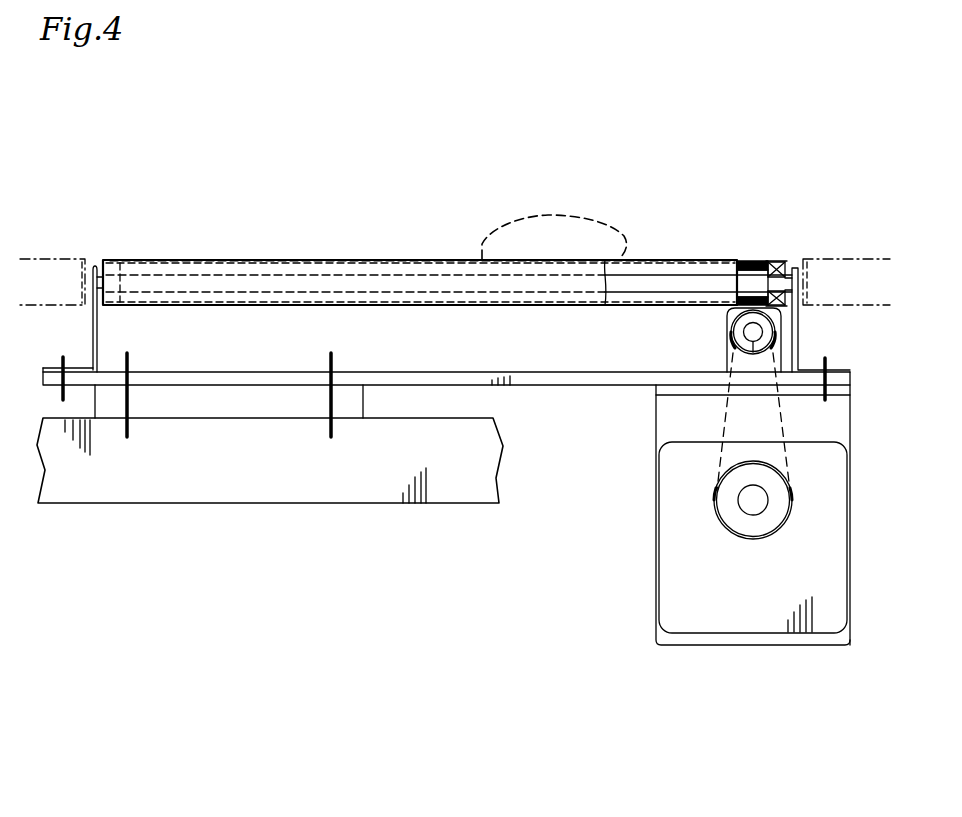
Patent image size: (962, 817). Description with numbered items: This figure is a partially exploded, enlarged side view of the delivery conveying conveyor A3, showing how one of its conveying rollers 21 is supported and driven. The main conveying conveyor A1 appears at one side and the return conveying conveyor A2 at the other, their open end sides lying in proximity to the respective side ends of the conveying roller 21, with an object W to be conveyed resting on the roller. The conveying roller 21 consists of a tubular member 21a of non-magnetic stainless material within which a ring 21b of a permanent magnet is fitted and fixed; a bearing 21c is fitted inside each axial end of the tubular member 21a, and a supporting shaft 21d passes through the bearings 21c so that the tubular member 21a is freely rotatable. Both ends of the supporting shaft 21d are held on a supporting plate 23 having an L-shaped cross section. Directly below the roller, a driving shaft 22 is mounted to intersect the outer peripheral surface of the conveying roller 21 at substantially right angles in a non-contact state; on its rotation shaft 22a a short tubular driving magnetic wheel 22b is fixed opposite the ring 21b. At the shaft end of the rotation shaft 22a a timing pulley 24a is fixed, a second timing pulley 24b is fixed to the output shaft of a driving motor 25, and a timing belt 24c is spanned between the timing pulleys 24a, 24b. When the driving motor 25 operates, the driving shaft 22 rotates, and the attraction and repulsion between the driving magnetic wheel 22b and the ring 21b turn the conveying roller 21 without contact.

The main conveying conveyor A1 is at (53, 258).
The return conveying conveyor A2 is at (815, 259).
The delivery conveying conveyor A3 is at (342, 259).
The conveying roller 21 is at (425, 259).
The object to be conveyed W is at (533, 232).
The tubular member 21a is at (640, 258).
The ring of a permanent magnet 21b is at (752, 262).
The bearing 21c is at (780, 262).
The supporting shaft 21d is at (657, 285).
The driving shaft 22 is at (630, 308).
The rotation shaft 22a is at (750, 338).
The driving magnetic wheel 22b is at (727, 314).
The supporting plate 23 is at (97, 330).
The timing pulley 24a is at (753, 344).
The timing pulley 24b is at (740, 525).
The timing belt 24c is at (717, 481).
The driving motor 25 is at (742, 607).